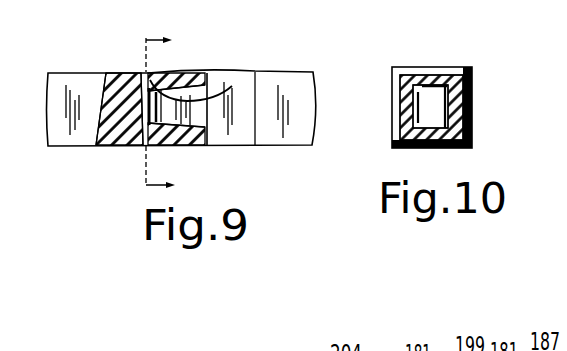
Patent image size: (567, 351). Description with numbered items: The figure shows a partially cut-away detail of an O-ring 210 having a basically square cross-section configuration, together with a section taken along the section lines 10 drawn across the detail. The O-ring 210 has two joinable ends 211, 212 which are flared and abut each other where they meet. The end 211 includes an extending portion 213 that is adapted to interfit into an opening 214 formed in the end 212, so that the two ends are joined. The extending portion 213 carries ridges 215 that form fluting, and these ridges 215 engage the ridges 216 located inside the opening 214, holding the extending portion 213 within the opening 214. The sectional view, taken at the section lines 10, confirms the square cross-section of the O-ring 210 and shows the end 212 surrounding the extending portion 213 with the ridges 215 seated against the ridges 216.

In FIG. 9, the section line 10- 10 is at (148, 111).
In FIG. 9, the O-ring 210 is at (336, 30).
In FIG. 10, the O-ring 210 is at (493, 34).
In FIG. 9, the joinable end 211 is at (217, 72).
In FIG. 9, the joinable end 212 is at (178, 72).
In FIG. 10, the joinable end 212 is at (398, 85).
In FIG. 9, the extending portion 213 is at (150, 114).
In FIG. 10, the extending portion 213 is at (436, 103).
In FIG. 9, the opening 214 is at (148, 76).
In FIG. 9, the ridges 215 is at (166, 146).
In FIG. 10, the ridges 215 is at (412, 127).
In FIG. 9, the ridges 216 is at (224, 88).